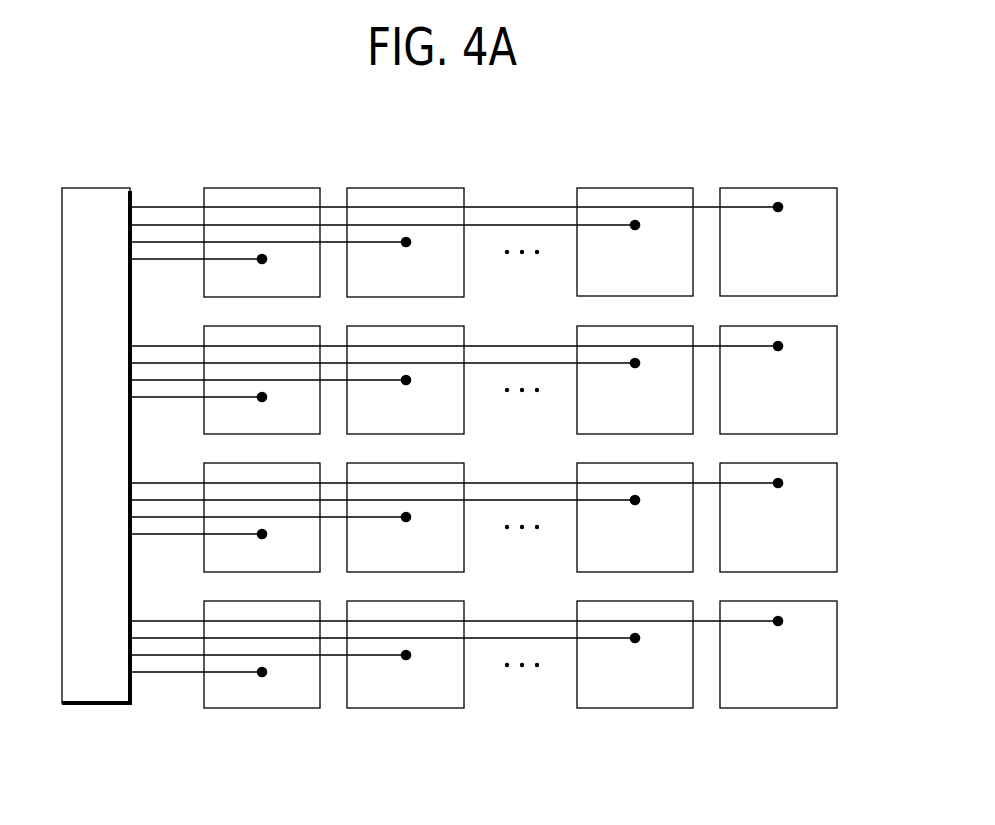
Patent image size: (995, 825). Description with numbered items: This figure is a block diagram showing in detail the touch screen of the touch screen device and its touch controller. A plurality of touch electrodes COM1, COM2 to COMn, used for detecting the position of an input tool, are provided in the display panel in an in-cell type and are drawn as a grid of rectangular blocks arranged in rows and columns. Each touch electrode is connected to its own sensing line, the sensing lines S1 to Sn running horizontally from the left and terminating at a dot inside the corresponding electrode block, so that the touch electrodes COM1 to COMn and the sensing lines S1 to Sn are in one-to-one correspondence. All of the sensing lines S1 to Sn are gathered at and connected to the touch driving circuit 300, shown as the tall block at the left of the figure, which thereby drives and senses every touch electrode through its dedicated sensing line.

The touch driving circuit 300 is at (77, 461).
The first sensing line S1 is at (164, 205).
The n-th sensing line Sn is at (163, 674).
The first touch electrode COM1 is at (262, 242).
The second touch electrode COM2 is at (405, 242).
The n-th touch electrode COMn is at (778, 654).